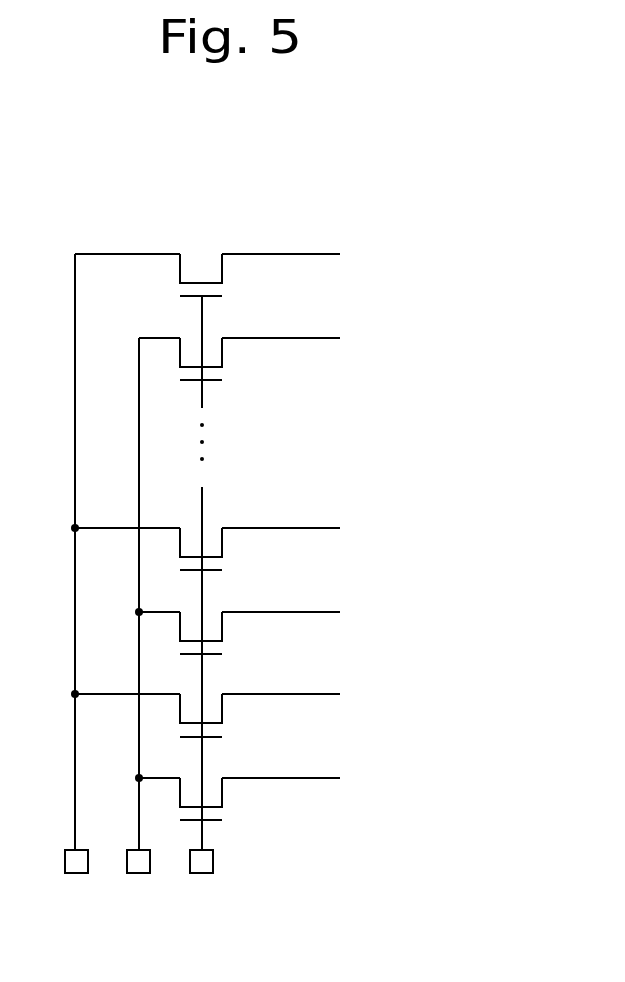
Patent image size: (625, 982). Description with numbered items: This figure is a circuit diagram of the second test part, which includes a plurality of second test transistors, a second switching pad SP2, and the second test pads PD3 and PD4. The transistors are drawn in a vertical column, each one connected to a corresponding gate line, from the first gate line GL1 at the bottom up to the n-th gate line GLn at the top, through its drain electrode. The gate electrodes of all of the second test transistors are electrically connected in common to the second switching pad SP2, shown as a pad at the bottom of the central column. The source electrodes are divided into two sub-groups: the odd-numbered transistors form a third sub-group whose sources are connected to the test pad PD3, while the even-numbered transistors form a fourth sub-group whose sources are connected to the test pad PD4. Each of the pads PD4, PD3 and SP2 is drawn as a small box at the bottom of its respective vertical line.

The gate line GLn is at (207, 241).
The gate line GL1 is at (239, 765).
The test pad PD4 is at (75, 873).
The test pad PD3 is at (139, 873).
The second switching pad SP2 is at (202, 873).